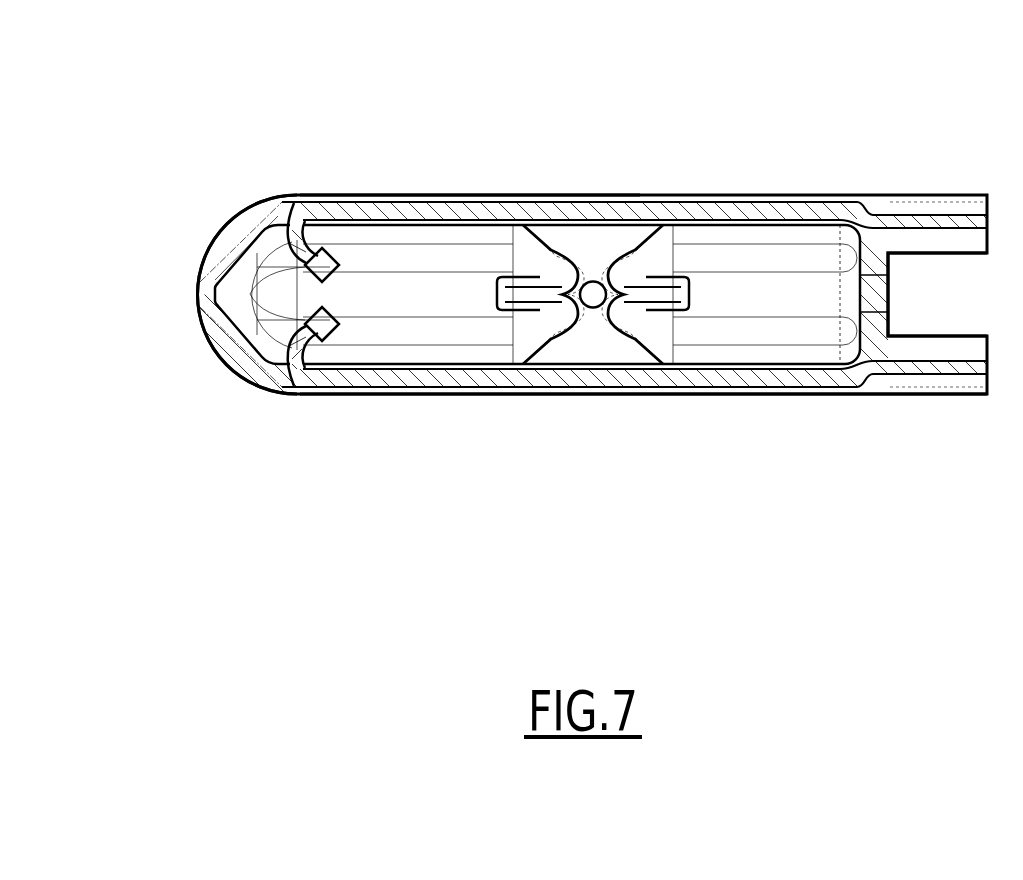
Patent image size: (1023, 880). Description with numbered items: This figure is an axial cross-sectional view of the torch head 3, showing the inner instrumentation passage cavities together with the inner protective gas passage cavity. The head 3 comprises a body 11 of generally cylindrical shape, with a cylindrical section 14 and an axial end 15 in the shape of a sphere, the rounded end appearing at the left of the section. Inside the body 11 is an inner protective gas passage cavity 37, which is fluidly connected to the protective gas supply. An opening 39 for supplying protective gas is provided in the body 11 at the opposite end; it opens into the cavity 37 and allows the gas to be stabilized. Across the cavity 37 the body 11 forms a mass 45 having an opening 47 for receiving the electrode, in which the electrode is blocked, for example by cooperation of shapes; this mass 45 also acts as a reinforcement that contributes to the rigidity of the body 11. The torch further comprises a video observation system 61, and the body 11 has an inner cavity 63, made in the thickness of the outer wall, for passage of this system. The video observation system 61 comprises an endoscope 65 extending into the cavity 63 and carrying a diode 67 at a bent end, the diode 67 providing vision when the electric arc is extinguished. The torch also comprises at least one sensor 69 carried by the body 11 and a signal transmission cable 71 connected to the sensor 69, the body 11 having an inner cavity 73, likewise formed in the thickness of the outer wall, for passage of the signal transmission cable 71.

The head 3 is at (122, 155).
The body 11 is at (835, 180).
The cylindrical section 14 is at (466, 195).
The axial end 15 is at (200, 293).
The inner protective gas passage cavity 37 is at (768, 236).
The opening for supplying protective gas 39 is at (877, 296).
The mass 45 is at (677, 296).
The opening for receiving the electrode 47 is at (593, 296).
The video observation system 61 is at (230, 183).
The inner cavity for passage of the video observation system 63 is at (691, 207).
The endoscope 65 is at (580, 212).
The diode 67 is at (325, 268).
The sensor 69 is at (325, 321).
The signal transmission cable 71 is at (480, 376).
The inner cavity for passage of the signal transmission cable 73 is at (795, 385).